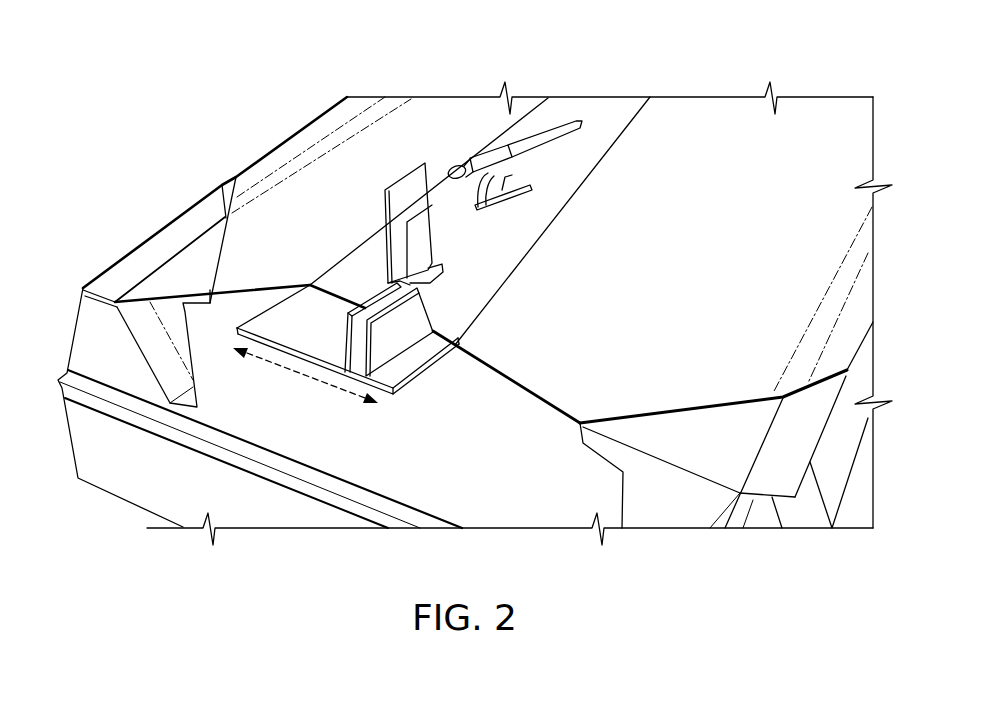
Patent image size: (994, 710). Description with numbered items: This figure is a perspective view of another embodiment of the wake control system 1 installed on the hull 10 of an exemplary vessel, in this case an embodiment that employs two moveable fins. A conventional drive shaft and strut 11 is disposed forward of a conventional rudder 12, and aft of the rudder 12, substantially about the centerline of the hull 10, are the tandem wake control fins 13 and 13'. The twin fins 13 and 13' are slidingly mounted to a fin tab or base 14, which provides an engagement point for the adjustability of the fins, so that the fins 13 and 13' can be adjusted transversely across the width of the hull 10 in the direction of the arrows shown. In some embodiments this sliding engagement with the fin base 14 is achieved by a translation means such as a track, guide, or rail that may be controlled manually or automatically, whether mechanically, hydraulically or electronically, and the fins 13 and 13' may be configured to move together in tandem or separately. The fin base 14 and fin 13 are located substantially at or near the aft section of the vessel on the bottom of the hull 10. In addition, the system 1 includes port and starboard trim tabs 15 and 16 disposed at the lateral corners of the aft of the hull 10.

The wake control system 1 is at (350, 150).
The hull 10 is at (750, 160).
The drive shaft and strut 11 is at (527, 178).
The rudder 12 is at (433, 250).
The wake control fin 13 is at (421, 332).
The wake control fin 13' is at (352, 298).
The fin base 14 is at (308, 327).
The trim tab 15 is at (725, 443).
The trim tab 16 is at (177, 273).